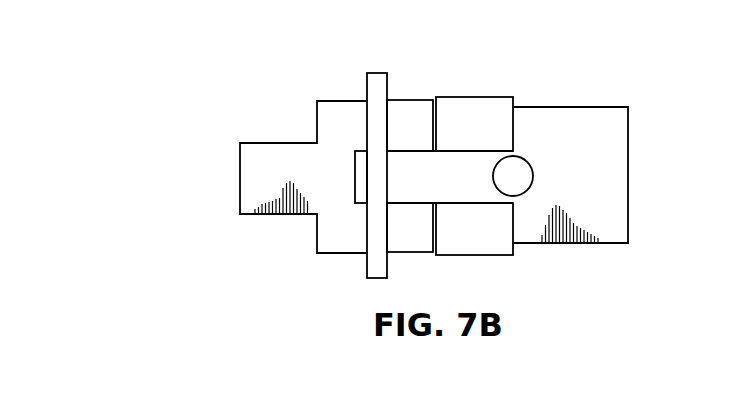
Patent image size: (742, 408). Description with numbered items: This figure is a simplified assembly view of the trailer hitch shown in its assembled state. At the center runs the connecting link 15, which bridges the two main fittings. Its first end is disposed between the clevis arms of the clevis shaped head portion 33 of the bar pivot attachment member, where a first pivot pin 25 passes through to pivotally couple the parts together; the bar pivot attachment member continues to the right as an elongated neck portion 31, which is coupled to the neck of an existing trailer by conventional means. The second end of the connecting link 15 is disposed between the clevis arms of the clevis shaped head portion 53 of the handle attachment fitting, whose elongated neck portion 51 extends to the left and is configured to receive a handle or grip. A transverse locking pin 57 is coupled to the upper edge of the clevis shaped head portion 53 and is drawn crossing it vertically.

The connecting link 15 is at (460, 188).
The first pivot pin 25 is at (520, 163).
The elongated neck portion 31 is at (610, 177).
The clevis shaped head portion 33 is at (468, 117).
The elongated neck portion 51 is at (263, 170).
The clevis shaped head portion 53 is at (415, 117).
The transverse locking pin 57 is at (373, 98).